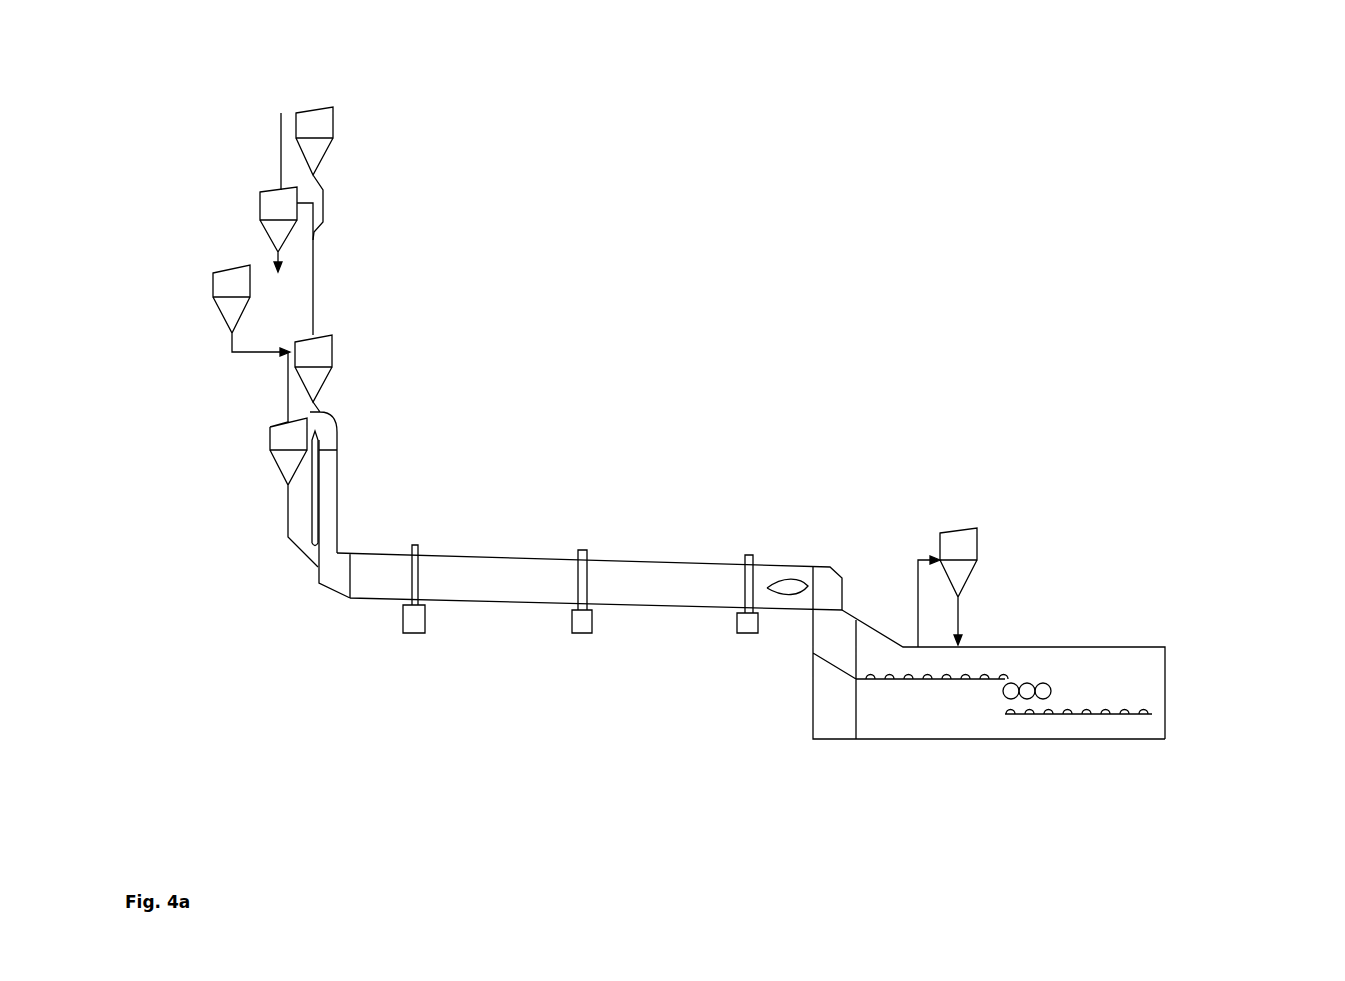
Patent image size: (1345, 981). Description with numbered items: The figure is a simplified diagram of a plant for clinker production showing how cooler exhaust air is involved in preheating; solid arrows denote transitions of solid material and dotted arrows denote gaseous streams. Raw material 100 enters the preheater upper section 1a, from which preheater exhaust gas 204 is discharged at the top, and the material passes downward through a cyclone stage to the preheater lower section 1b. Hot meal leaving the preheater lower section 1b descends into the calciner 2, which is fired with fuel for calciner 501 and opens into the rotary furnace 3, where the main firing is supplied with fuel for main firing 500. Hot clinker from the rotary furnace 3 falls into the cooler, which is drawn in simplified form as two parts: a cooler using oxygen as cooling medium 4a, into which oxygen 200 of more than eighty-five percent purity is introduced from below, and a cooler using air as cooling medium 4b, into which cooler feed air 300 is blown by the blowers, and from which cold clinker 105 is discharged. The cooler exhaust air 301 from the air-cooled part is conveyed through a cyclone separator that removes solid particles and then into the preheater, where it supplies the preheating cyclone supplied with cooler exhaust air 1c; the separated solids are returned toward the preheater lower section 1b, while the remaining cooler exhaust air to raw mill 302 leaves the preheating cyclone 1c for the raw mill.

The preheater upper section 1a is at (345, 173).
The preheater lower section 1b is at (263, 459).
The preheating cyclone supplied with cooler exhaust air 1c is at (221, 310).
The calciner 2 is at (345, 500).
The rotary furnace 3 is at (589, 589).
The cooler using oxygen as cooling medium 4a is at (956, 652).
The cooler using air as cooling medium 4b is at (1010, 693).
The raw material 100 is at (270, 138).
The cold clinker 105 is at (1157, 719).
The oxygen 200 is at (833, 749).
The preheater exhaust gas 204 is at (313, 45).
The cooler feed air 300 is at (1073, 749).
The cooler exhaust air 301 is at (262, 276).
The cooler exhaust air to raw mill 302 is at (232, 268).
The fuel for main firing 500 is at (809, 588).
The fuel for calciner 501 is at (420, 522).